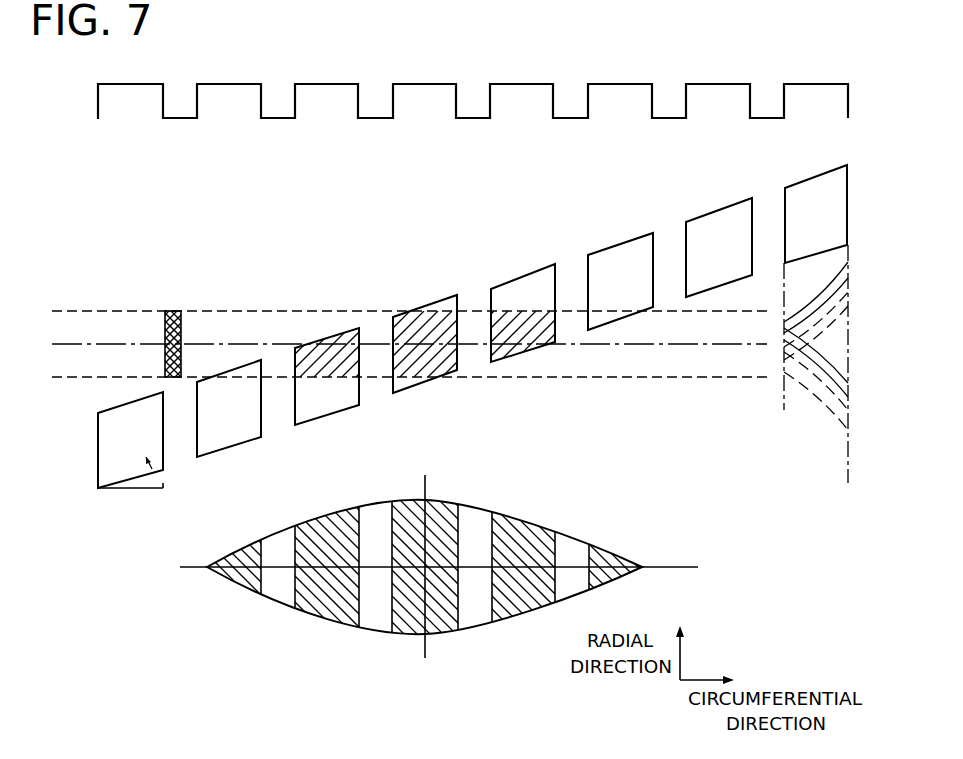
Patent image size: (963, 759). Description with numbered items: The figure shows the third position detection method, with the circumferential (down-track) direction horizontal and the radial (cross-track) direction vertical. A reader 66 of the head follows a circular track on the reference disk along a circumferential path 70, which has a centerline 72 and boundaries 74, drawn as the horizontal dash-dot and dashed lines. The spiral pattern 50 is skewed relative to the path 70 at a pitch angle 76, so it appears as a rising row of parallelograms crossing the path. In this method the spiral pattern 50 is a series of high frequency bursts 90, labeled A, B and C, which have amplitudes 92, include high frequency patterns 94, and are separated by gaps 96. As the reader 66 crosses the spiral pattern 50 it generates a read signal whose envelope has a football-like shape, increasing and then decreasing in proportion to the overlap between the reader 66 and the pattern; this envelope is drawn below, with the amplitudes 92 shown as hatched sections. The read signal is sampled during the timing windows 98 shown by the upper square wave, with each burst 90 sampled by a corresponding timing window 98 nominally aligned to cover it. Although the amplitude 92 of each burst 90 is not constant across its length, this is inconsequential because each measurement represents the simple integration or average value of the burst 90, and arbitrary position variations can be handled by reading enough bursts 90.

The spiral pattern 50 is at (620, 168).
The reader 66 is at (182, 330).
The circumferential path 70 is at (388, 354).
The centerline 72 is at (83, 345).
The boundaries 74 is at (127, 310).
The pitch angle 76 is at (155, 492).
The high frequency bursts 90 is at (343, 410).
The amplitudes 92 is at (303, 525).
The high frequency patterns 94 is at (802, 410).
The gaps 96 is at (670, 230).
The timing windows 98 is at (88, 97).